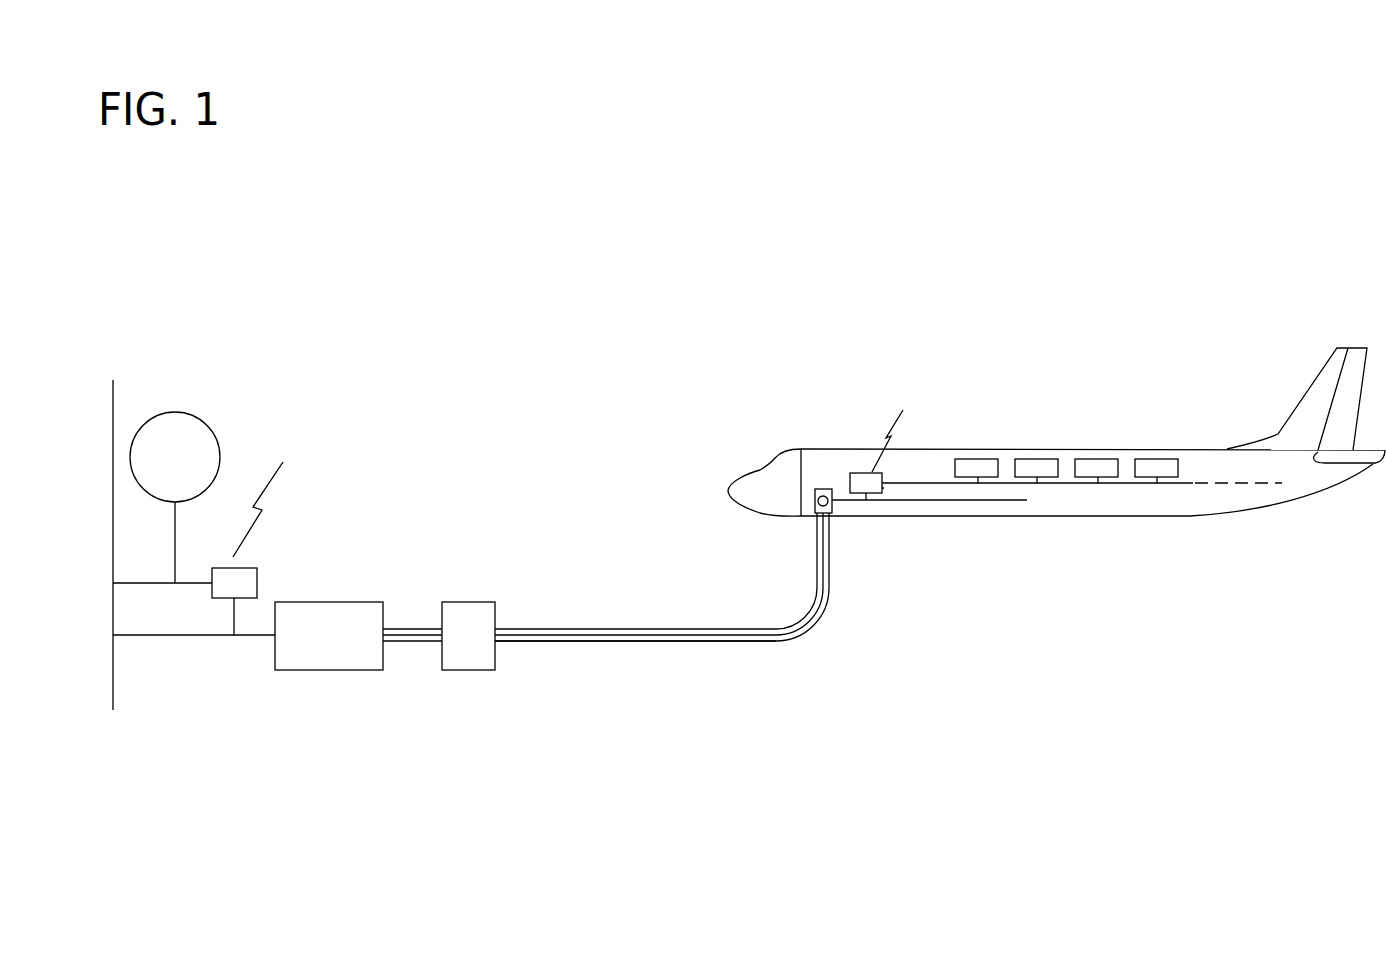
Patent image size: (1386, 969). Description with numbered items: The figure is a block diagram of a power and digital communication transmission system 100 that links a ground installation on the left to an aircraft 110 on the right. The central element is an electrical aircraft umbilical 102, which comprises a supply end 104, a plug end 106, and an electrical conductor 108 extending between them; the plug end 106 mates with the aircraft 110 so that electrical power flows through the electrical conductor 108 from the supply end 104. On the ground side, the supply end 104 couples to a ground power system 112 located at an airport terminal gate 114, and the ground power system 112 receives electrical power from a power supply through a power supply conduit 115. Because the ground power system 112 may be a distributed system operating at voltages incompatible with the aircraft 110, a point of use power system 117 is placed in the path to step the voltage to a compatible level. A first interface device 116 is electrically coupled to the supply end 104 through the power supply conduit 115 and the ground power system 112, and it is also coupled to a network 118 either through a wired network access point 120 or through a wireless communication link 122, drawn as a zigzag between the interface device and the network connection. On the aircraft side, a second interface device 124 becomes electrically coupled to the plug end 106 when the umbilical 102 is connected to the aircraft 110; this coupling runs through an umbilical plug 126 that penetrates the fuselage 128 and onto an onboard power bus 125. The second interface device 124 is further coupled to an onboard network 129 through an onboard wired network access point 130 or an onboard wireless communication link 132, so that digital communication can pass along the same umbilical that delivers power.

The power and digital communication transmission system 100 is at (613, 360).
The electrical aircraft umbilical 102 is at (632, 628).
The supply end 104 is at (557, 645).
The plug end 106 is at (833, 505).
The electrical conductor 108 is at (808, 620).
The aircraft 110 is at (1048, 447).
The ground power system 112 is at (308, 651).
The airport terminal gate 114 is at (113, 390).
The power supply conduit 115 is at (153, 640).
The first interface device 116 is at (257, 578).
The point of use power system 117 is at (448, 651).
The network 118 is at (183, 413).
The wired network access point 120 is at (175, 583).
The wireless communication link 122 is at (283, 472).
The second interface device 124 is at (860, 473).
The onboard power bus 125 is at (962, 502).
The umbilical plug 126 is at (823, 488).
The fuselage 128 is at (1083, 502).
The onboard network 129 is at (933, 483).
The onboard wired network access point 130 is at (883, 488).
The onboard wireless communication link 132 is at (903, 412).